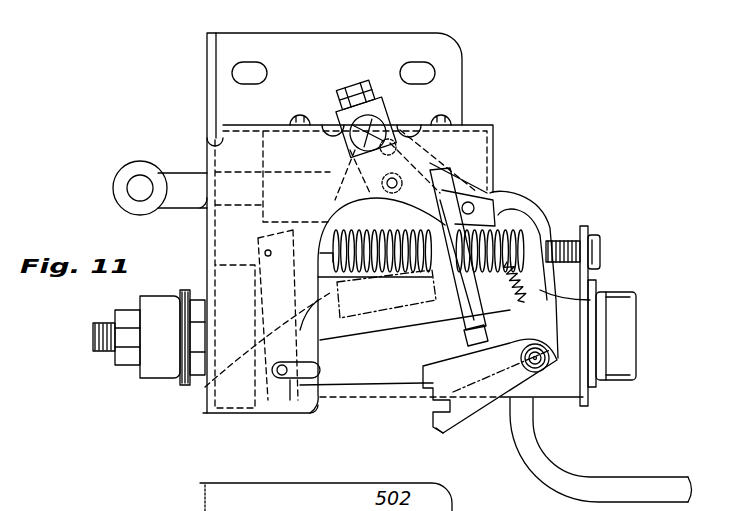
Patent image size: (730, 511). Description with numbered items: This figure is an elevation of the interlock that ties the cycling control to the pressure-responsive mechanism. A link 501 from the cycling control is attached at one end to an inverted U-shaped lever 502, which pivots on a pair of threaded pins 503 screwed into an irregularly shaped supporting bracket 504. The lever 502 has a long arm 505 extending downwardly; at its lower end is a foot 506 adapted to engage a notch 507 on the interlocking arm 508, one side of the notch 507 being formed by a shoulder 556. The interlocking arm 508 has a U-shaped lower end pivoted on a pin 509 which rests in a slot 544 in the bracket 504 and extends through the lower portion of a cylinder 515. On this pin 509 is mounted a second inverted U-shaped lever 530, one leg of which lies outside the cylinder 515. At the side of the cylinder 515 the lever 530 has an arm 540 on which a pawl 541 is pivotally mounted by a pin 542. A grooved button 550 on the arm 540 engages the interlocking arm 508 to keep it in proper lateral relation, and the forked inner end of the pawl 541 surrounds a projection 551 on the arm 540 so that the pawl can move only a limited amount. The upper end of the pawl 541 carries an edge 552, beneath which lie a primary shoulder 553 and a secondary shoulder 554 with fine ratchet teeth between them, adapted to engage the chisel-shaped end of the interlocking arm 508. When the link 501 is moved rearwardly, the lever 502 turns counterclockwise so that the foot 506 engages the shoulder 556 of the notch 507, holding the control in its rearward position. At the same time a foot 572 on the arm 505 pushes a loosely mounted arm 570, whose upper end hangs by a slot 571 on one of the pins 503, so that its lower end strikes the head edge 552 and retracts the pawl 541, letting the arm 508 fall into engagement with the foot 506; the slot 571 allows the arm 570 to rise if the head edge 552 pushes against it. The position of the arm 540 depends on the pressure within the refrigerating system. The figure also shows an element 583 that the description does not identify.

The link 501 is at (180, 178).
The inverted U-shaped lever 502 is at (360, 86).
The pins 503 is at (393, 123).
The supporting bracket 504 is at (462, 110).
The long arm 505 is at (420, 300).
The foot 506 is at (600, 337).
The notch 507 is at (595, 310).
The interlocking arm 508 is at (392, 325).
The pin 509 is at (280, 378).
The cylinder 515 is at (568, 378).
The inverted U-shaped lever 530 is at (192, 403).
The arm 540 is at (365, 390).
The pawl 541 is at (472, 406).
The pin 542 is at (542, 368).
The slot 544 is at (290, 400).
The button 550 is at (320, 372).
The projection 551 is at (430, 402).
The edge 552 is at (500, 205).
The primary shoulder 553 is at (522, 262).
The secondary shoulder 554 is at (527, 302).
The shoulder 556 is at (470, 333).
The loosely mounted arm 570 is at (490, 195).
The slot 571 is at (395, 118).
The foot 572 is at (358, 215).
The conduit 583 is at (578, 485).